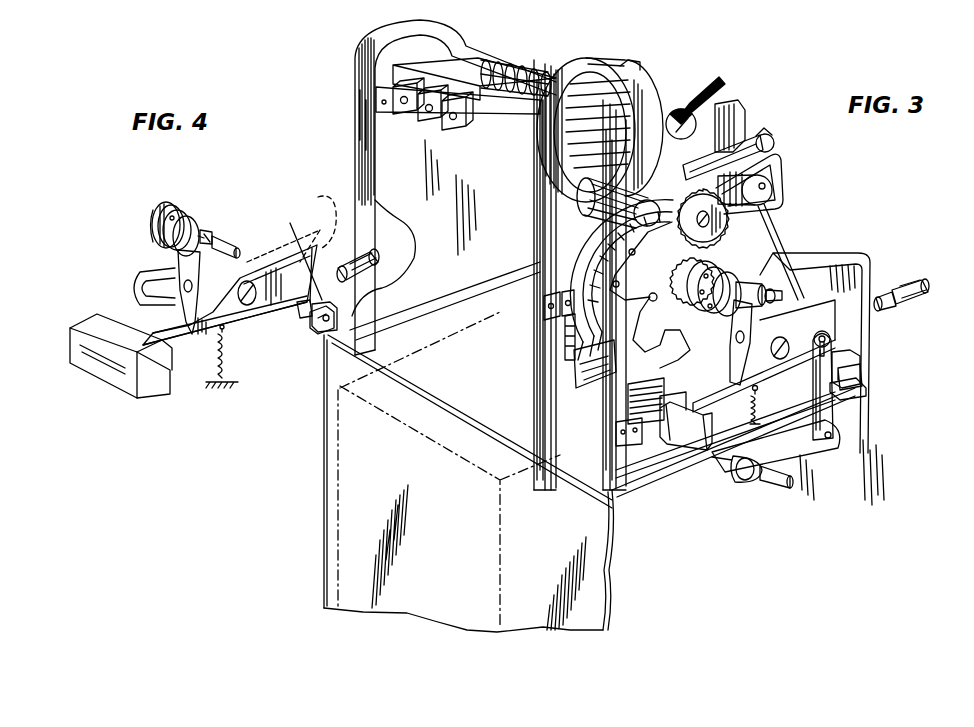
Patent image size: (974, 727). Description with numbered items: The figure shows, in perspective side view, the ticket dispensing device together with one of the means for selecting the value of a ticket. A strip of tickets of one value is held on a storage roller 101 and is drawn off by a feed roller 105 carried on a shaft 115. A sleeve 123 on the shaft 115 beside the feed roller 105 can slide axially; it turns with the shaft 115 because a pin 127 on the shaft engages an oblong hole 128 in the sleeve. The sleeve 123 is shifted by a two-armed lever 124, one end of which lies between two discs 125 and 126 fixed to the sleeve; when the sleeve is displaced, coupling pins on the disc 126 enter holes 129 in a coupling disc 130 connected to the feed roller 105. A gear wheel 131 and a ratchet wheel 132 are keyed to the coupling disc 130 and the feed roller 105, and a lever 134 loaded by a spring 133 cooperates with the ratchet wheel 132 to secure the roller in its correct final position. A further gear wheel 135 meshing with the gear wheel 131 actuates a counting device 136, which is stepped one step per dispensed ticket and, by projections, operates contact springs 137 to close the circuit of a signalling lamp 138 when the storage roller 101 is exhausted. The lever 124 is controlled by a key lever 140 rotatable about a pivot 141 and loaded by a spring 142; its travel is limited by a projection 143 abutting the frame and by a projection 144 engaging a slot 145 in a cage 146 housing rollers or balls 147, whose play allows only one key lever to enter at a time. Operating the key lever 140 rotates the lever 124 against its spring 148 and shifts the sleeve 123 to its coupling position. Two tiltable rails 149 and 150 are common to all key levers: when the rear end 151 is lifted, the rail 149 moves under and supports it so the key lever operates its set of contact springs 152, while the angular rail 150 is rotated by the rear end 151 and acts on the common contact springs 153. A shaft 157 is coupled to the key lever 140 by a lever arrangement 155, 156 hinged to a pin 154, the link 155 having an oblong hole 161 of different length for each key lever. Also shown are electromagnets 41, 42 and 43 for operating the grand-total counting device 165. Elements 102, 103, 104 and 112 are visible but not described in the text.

In FIG. 3, the electromagnet 41 is at (406, 114).
In FIG. 3, the electromagnet 42 is at (430, 121).
In FIG. 3, the electromagnet 43 is at (460, 130).
In FIG. 3, the storage roller 101 is at (722, 84).
In FIG. 3, the knob 102 is at (679, 118).
In FIG. 3, the support post 103 is at (640, 60).
In FIG. 3, the roller 104 is at (582, 198).
In FIG. 3, the feed roller 105 is at (606, 290).
In FIG. 3, the drum 112 is at (578, 64).
In FIG. 4, the shaft 115 is at (222, 246).
In FIG. 3, the shaft 115 is at (784, 297).
In FIG. 3, the sleeve 123 is at (766, 294).
In FIG. 4, the lever 124 is at (193, 270).
In FIG. 3, the lever 124 is at (730, 350).
In FIG. 4, the disc 125 is at (182, 243).
In FIG. 3, the disc 125 is at (748, 288).
In FIG. 4, the disc 126 is at (168, 238).
In FIG. 3, the disc 126 is at (734, 282).
In FIG. 4, the pin 127 is at (212, 236).
In FIG. 3, the pin 127 is at (781, 358).
In FIG. 4, the oblong hole 128 is at (204, 230).
In FIG. 3, the oblong hole 128 is at (774, 305).
In FIG. 4, the holes 129 is at (155, 220).
In FIG. 3, the holes 129 is at (726, 274).
In FIG. 4, the coupling disc 130 is at (168, 205).
In FIG. 3, the coupling disc 130 is at (722, 258).
In FIG. 3, the gear wheel 131 is at (780, 226).
In FIG. 3, the ratchet wheel 132 is at (608, 268).
In FIG. 3, the spring 133 is at (566, 342).
In FIG. 3, the lever 134 is at (595, 369).
In FIG. 3, the gear wheel 135 is at (690, 208).
In FIG. 3, the counting device 136 is at (782, 176).
In FIG. 3, the contact springs 137 is at (774, 191).
In FIG. 3, the signalling lamp 138 is at (776, 150).
In FIG. 4, the key lever 140 is at (370, 257).
In FIG. 3, the key lever 140 is at (930, 292).
In FIG. 4, the pivot 141 is at (231, 287).
In FIG. 3, the pivot 141 is at (792, 366).
In FIG. 4, the spring 142 is at (226, 356).
In FIG. 3, the spring 142 is at (751, 410).
In FIG. 4, the projection 143 is at (324, 205).
In FIG. 3, the projection 143 is at (852, 285).
In FIG. 4, the projection 144 is at (301, 255).
In FIG. 3, the projection 144 is at (860, 370).
In FIG. 4, the slot 145 is at (302, 318).
In FIG. 4, the cage 146 is at (318, 322).
In FIG. 3, the cage 146 is at (858, 400).
In FIG. 4, the rollers or balls 147 is at (330, 316).
In FIG. 3, the rollers or balls 147 is at (866, 386).
In FIG. 4, the spring 148 is at (178, 313).
In FIG. 4, the tiltable rail 149 is at (152, 392).
In FIG. 3, the tiltable rail 149 is at (688, 436).
In FIG. 4, the tiltable rail 150 is at (75, 347).
In FIG. 3, the tiltable rail 150 is at (588, 418).
In FIG. 4, the rear end 151 is at (178, 352).
In FIG. 3, the rear end 151 is at (710, 410).
In FIG. 3, the contact springs 152 is at (668, 392).
In FIG. 3, the contact springs 153 is at (558, 310).
In FIG. 3, the pin 154 is at (830, 338).
In FIG. 3, the link 155 is at (824, 416).
In FIG. 3, the lever 156 is at (830, 446).
In FIG. 3, the shaft 157 is at (776, 490).
In FIG. 3, the oblong hole 161 is at (834, 347).
In FIG. 3, the counting device 165 is at (508, 70).